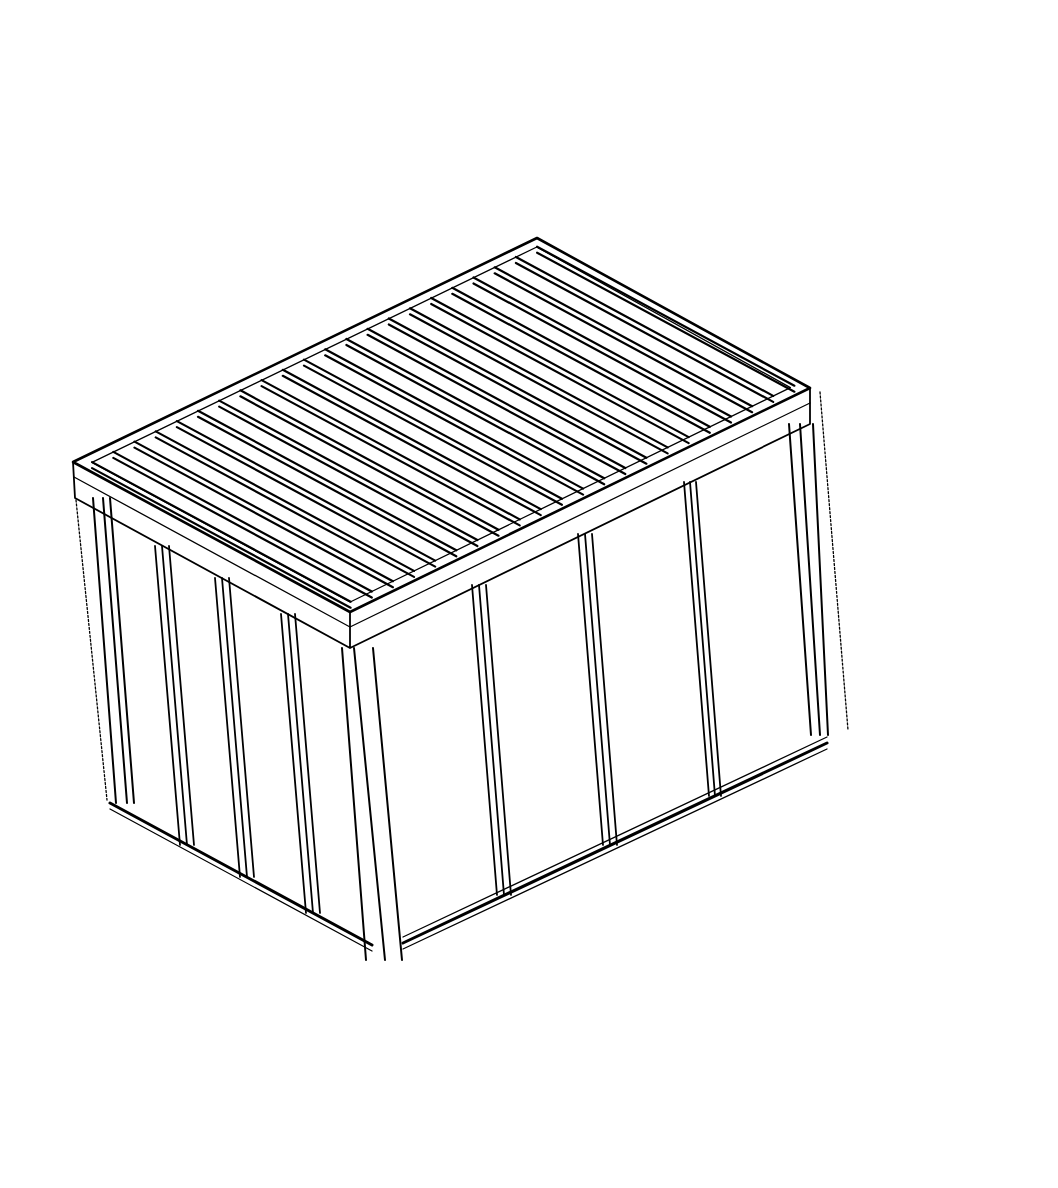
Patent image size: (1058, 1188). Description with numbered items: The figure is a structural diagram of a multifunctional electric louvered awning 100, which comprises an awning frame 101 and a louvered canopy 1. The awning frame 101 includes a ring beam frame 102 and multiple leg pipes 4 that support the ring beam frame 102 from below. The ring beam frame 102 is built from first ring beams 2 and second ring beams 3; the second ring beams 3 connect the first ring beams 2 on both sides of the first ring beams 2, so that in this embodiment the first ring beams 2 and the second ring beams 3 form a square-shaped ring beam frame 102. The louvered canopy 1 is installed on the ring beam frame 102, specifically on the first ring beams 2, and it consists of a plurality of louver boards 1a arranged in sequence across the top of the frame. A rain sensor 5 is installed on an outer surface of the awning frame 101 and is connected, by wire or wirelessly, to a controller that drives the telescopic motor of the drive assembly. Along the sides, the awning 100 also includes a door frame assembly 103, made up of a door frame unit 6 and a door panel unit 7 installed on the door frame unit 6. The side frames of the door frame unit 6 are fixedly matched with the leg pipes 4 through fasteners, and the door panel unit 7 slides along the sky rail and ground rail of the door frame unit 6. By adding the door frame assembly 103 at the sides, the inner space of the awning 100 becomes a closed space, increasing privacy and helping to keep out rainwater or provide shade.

The multifunctional electric louvered awning 100 is at (211, 276).
The awning frame 101 is at (878, 88).
The ring beam frame 102 is at (740, 147).
The door frame assembly 103 is at (937, 979).
The louvered canopy 1 is at (372, 400).
The louver boards 1a is at (263, 457).
The first ring beams 2 is at (548, 545).
The second ring beams 3 is at (690, 322).
The leg pipes 4 is at (820, 388).
The rain sensor 5 is at (397, 590).
The door frame unit 6 is at (828, 745).
The door panel unit 7 is at (490, 727).